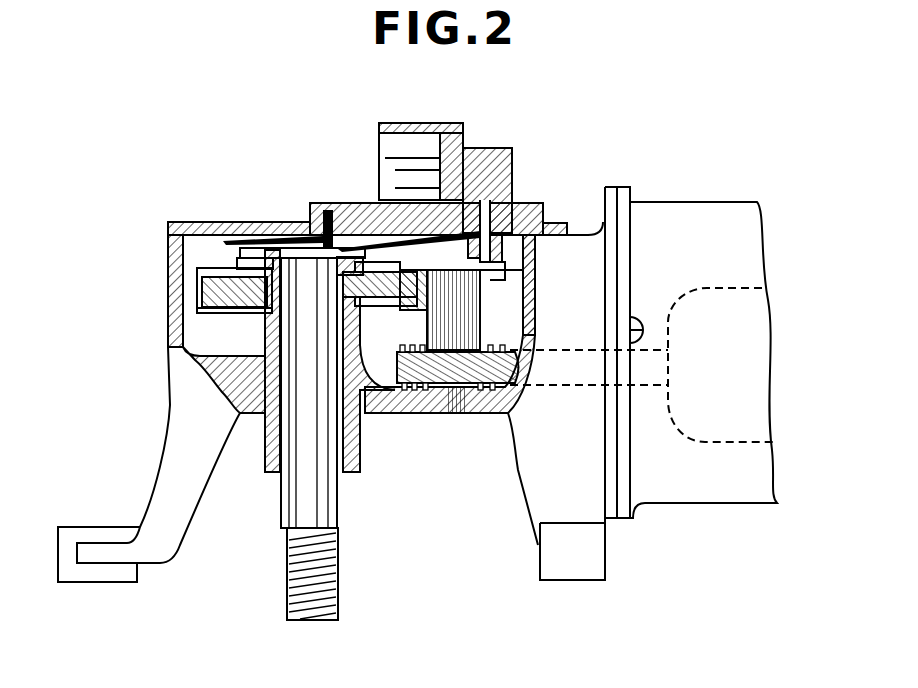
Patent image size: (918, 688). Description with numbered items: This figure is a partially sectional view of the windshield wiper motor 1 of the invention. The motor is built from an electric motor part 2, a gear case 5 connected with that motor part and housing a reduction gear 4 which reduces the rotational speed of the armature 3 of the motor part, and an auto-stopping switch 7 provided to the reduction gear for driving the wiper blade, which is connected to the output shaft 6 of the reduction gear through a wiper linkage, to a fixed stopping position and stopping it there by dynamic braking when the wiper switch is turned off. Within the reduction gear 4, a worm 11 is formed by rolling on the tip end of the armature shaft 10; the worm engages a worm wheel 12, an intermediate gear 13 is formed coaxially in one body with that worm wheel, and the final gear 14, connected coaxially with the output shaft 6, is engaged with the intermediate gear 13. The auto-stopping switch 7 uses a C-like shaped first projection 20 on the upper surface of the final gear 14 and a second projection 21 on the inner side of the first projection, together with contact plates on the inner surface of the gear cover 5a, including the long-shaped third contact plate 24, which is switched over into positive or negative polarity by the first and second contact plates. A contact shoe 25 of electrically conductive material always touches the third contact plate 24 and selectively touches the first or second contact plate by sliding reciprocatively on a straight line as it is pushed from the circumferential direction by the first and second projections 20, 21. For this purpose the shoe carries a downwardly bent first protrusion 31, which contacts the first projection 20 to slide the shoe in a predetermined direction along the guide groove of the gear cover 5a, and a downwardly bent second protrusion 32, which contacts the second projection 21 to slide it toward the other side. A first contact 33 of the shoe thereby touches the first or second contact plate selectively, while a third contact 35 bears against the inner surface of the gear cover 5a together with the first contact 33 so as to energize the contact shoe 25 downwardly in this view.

The windshield wiper motor 1 is at (612, 128).
The electric motor part 2 is at (735, 212).
The armature 3 is at (745, 288).
The reduction gear 4 is at (380, 366).
The gear case 5 is at (480, 413).
The gear cover 5a is at (514, 185).
The output shaft 6 is at (339, 500).
The auto-stopping switch 7 is at (212, 254).
The armature shaft 10 is at (578, 385).
The worm 11 is at (484, 345).
The worm wheel 12 is at (448, 375).
The intermediate gear 13 is at (484, 297).
The final gear 14 is at (197, 300).
The first projection 20 is at (215, 223).
The second projection 21 is at (343, 248).
The third contact plate 24 is at (447, 193).
The contact shoe 25 is at (306, 236).
The first protrusion 31 is at (236, 260).
The second protrusion 32 is at (384, 306).
The first contact 33 is at (366, 248).
The third contact 35 is at (268, 248).